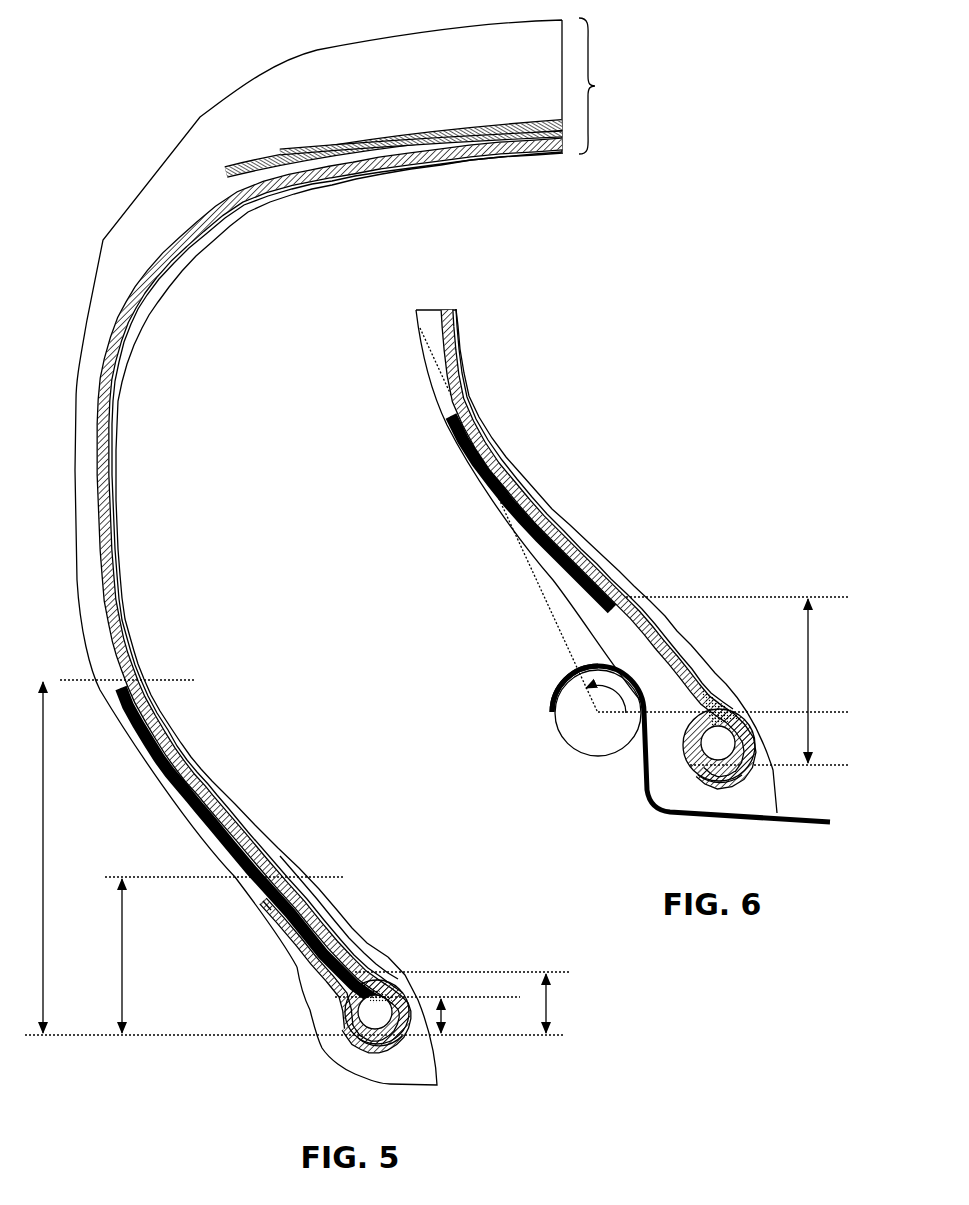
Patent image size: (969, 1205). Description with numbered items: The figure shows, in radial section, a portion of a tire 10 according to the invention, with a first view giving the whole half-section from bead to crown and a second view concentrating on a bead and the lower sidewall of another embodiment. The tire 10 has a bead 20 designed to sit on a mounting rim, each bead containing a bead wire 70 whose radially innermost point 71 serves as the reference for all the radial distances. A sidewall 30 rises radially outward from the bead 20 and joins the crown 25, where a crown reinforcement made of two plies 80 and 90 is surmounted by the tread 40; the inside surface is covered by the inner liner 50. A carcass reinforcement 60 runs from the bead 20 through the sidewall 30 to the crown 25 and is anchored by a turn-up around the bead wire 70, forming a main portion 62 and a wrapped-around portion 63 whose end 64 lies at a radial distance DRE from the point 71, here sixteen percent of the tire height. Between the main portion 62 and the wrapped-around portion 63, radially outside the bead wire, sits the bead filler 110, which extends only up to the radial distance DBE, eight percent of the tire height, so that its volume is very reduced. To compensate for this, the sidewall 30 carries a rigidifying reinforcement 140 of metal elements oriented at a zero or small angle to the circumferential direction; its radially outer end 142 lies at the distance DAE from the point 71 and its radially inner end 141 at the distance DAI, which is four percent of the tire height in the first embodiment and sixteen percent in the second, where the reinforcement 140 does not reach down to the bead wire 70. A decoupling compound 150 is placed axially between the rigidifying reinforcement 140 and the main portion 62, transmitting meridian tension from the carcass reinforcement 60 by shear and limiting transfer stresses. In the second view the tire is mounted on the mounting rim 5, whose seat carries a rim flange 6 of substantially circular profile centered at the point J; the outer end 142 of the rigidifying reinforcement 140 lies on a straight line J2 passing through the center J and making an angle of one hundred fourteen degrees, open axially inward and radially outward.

In FIG. 5, the tire 10 is at (340, 549).
In FIG. 5, the bead 20 is at (313, 977).
In FIG. 6, the bead 20 is at (667, 762).
In FIG. 5, the crown 25 is at (610, 86).
In FIG. 5, the sidewall 30 is at (86, 427).
In FIG. 5, the tread 40 is at (497, 79).
In FIG. 5, the inner liner 50 is at (140, 319).
In FIG. 6, the inner liner 50 is at (456, 334).
In FIG. 5, the carcass reinforcement 60 is at (118, 378).
In FIG. 6, the carcass reinforcement 60 is at (514, 461).
In FIG. 5, the main portion 62 is at (350, 895).
In FIG. 5, the wrapped-around portion 63 is at (310, 917).
In FIG. 5, the end 64 is at (280, 882).
In FIG. 6, the end 64 is at (626, 612).
In FIG. 5, the bead wire 70 is at (370, 1020).
In FIG. 6, the bead wire 70 is at (710, 750).
In FIG. 5, the radially innermost point 71 is at (393, 1057).
In FIG. 6, the radially innermost point 71 is at (747, 783).
In FIG. 5, the ply 80 is at (273, 165).
In FIG. 5, the ply 90 is at (312, 148).
In FIG. 5, the bead filler 110 is at (357, 997).
In FIG. 6, the bead filler 110 is at (740, 713).
In FIG. 5, the rigidifying reinforcement 140 is at (205, 768).
In FIG. 6, the rigidifying reinforcement 140 is at (550, 508).
In FIG. 5, the radially inner end 141 is at (402, 1001).
In FIG. 6, the radially inner end 141 is at (598, 600).
In FIG. 5, the radially outer end 142 is at (140, 692).
In FIG. 6, the radially outer end 142 is at (449, 408).
In FIG. 5, the decoupling compound 150 is at (120, 663).
In FIG. 6, the decoupling compound 150 is at (470, 388).
In FIG. 5, the distance DAE is at (80, 857).
In FIG. 5, the radial distance DRE is at (93, 956).
In FIG. 5, the distance DAI is at (473, 1016).
In FIG. 6, the distance DAI is at (835, 681).
In FIG. 5, the radial distance DBE is at (579, 1003).
In FIG. 6, the mounting rim 5 is at (737, 813).
In FIG. 6, the rim flange 6 is at (553, 703).
In FIG. 6, the center of the rim flange J is at (596, 717).
In FIG. 6, the straight line J2 is at (525, 562).